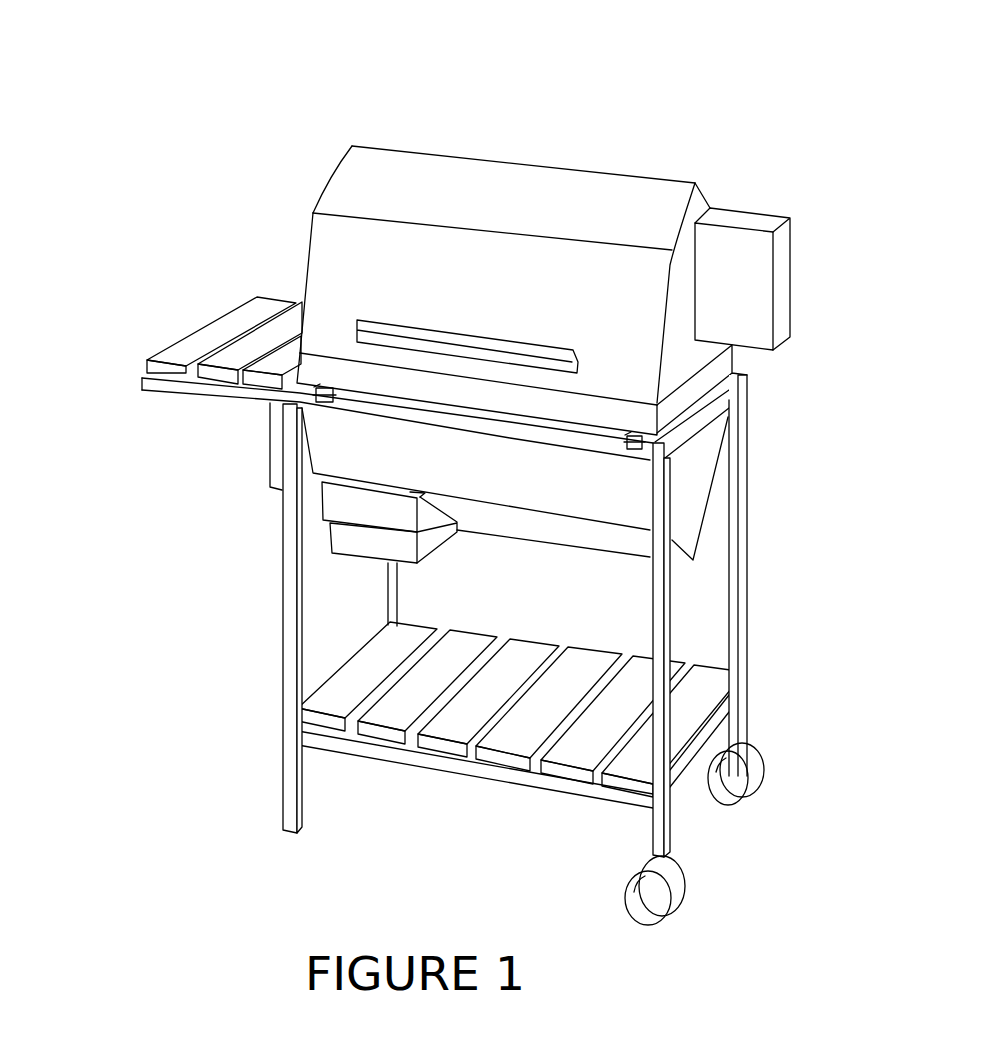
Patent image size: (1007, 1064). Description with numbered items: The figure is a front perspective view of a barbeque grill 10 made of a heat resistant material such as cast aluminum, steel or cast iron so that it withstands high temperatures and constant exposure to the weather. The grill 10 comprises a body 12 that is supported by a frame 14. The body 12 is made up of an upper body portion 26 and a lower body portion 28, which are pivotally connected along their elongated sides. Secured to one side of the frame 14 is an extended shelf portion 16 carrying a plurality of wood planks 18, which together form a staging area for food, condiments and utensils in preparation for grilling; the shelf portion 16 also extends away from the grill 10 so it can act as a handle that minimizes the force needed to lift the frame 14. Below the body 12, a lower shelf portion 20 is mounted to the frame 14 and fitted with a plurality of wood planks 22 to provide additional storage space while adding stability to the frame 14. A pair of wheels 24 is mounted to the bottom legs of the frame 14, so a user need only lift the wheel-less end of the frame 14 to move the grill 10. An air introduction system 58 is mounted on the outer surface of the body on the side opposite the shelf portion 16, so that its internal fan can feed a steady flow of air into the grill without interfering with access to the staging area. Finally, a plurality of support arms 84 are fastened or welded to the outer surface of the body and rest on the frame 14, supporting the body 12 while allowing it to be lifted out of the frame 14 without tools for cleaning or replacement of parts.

The barbeque grill 10 is at (634, 124).
The body 12 is at (653, 178).
The frame 14 is at (283, 604).
The extended shelf portion 16 is at (198, 400).
The wood planks 18 is at (252, 342).
The lower shelf portion 20 is at (463, 780).
The wood planks 22 is at (470, 633).
The wheels 24 is at (747, 781).
The upper body portion 26 is at (373, 265).
The lower body portion 28 is at (702, 497).
The air introduction system 58 is at (803, 271).
The support arms 84 is at (326, 403).